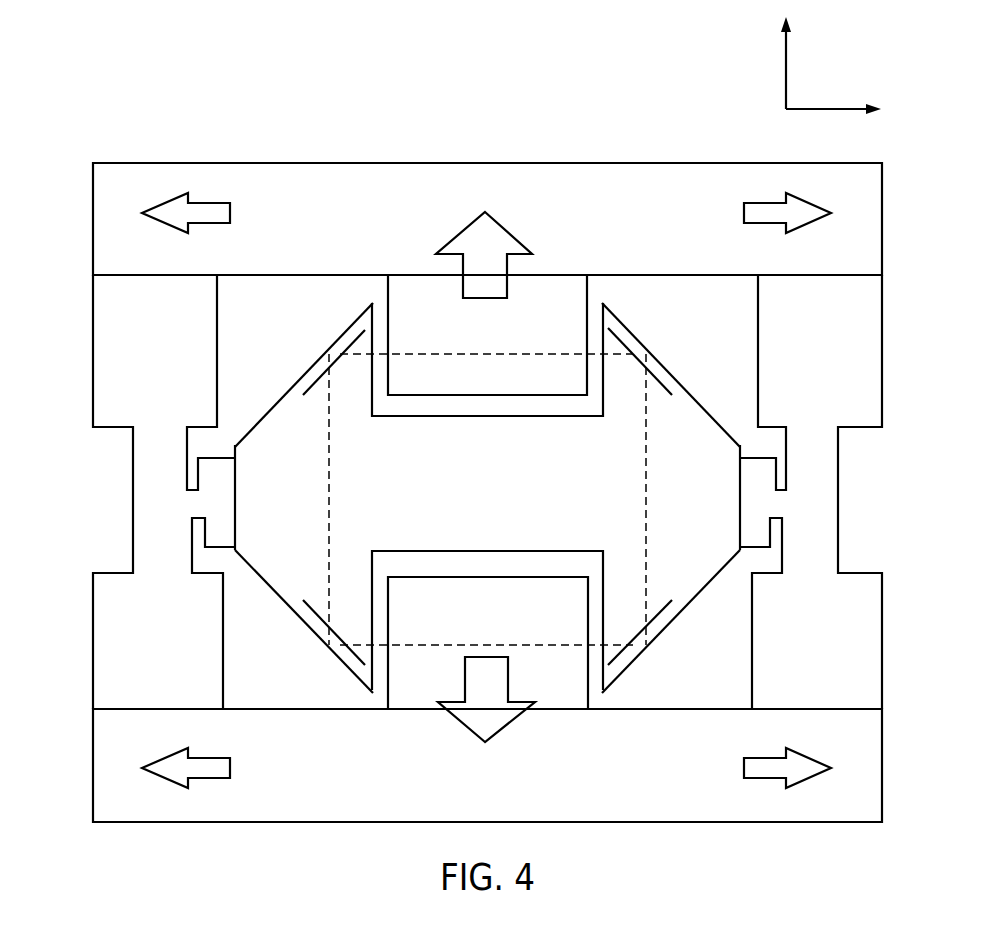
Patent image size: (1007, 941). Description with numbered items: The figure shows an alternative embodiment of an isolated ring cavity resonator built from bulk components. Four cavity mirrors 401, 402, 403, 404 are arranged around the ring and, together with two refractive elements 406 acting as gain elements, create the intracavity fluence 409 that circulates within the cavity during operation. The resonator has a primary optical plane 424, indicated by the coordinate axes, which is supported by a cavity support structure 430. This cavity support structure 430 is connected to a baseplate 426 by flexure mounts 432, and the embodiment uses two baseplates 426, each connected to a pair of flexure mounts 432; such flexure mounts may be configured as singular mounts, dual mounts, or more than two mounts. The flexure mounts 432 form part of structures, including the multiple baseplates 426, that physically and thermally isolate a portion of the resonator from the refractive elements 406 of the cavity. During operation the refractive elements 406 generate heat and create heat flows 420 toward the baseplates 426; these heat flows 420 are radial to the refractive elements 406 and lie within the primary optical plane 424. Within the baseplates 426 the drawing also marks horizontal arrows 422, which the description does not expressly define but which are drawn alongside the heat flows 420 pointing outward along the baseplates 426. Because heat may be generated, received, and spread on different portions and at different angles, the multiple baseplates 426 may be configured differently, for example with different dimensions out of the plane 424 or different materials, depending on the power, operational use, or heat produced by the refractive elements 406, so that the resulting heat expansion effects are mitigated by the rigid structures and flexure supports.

The cavity mirror 401 is at (650, 357).
The cavity mirror 402 is at (648, 634).
The cavity mirror 403 is at (326, 645).
The cavity mirror 404 is at (325, 358).
The refractive element 406 is at (502, 340).
The intracavity fluence 409 is at (337, 490).
The heat flow 420 is at (515, 222).
The horizontal displacement arrows 422 is at (239, 217).
The primary optical plane 424 is at (803, 72).
The baseplate 426 is at (419, 218).
The cavity support structure 430 is at (514, 419).
The flexure mount 432 is at (119, 497).